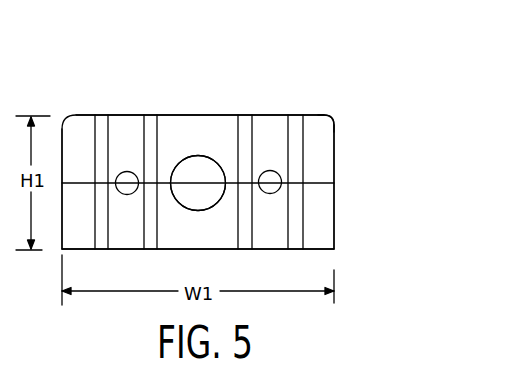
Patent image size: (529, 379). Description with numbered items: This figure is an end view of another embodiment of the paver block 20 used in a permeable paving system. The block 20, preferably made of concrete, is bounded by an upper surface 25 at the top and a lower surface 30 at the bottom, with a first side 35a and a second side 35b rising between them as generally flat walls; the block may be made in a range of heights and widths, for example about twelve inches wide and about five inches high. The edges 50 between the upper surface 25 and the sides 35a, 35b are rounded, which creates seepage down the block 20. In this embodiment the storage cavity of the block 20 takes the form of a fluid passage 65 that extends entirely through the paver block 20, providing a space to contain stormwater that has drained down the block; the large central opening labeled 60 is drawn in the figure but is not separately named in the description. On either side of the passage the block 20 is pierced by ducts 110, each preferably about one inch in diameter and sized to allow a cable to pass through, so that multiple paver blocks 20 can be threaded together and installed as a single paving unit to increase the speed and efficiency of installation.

The paver block 20 is at (339, 80).
The upper surface 25 is at (125, 115).
The lower surface 30 is at (325, 250).
The first side wall 35a is at (62, 137).
The second side wall 35b is at (334, 140).
The edges 50 is at (328, 114).
The central aperture 60 is at (187, 157).
The fluid passage 65 is at (206, 170).
The ducts 110 is at (281, 193).